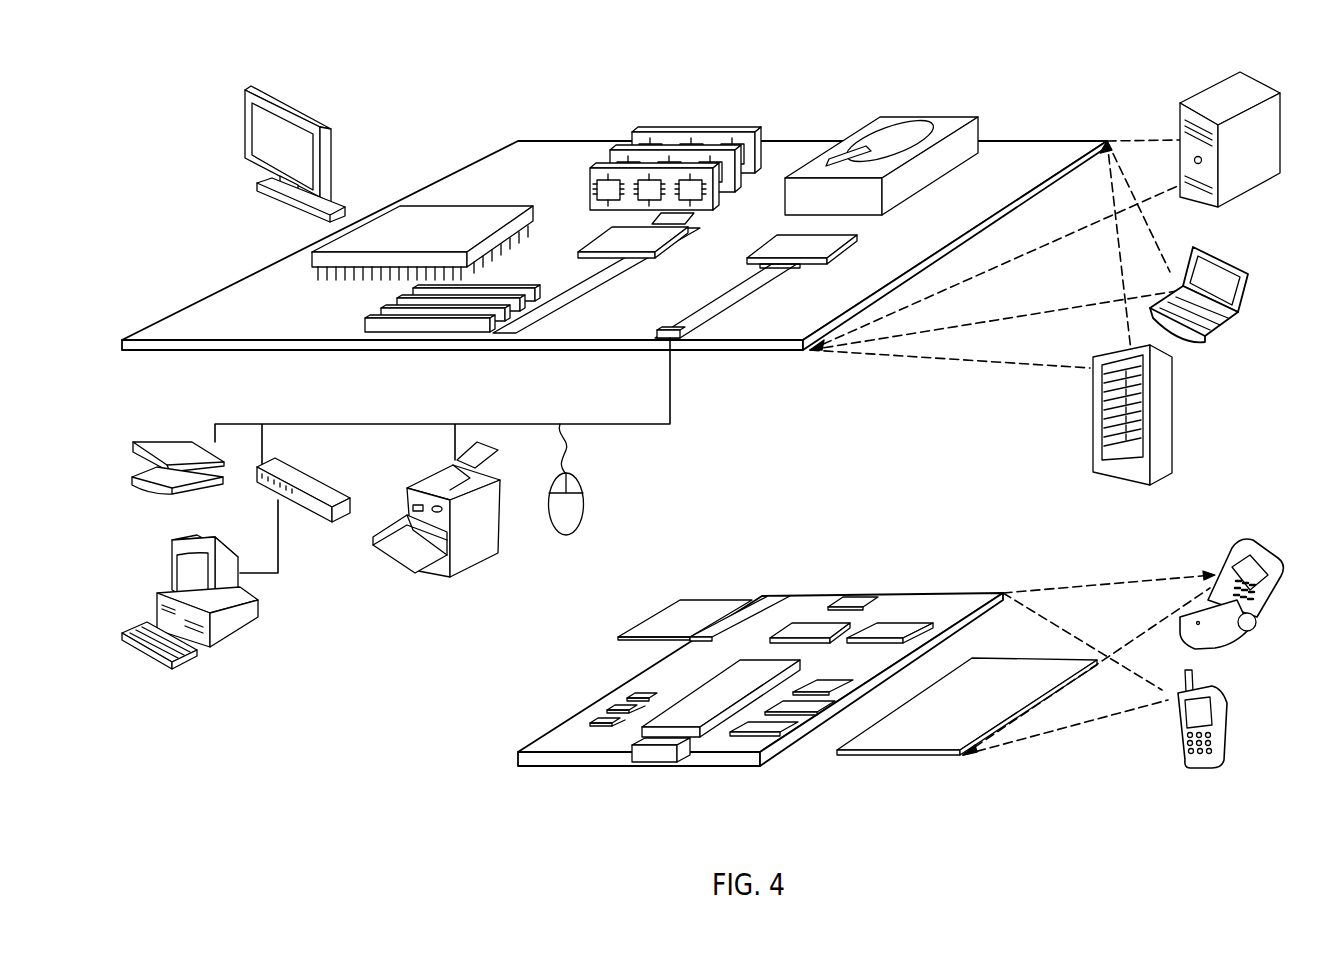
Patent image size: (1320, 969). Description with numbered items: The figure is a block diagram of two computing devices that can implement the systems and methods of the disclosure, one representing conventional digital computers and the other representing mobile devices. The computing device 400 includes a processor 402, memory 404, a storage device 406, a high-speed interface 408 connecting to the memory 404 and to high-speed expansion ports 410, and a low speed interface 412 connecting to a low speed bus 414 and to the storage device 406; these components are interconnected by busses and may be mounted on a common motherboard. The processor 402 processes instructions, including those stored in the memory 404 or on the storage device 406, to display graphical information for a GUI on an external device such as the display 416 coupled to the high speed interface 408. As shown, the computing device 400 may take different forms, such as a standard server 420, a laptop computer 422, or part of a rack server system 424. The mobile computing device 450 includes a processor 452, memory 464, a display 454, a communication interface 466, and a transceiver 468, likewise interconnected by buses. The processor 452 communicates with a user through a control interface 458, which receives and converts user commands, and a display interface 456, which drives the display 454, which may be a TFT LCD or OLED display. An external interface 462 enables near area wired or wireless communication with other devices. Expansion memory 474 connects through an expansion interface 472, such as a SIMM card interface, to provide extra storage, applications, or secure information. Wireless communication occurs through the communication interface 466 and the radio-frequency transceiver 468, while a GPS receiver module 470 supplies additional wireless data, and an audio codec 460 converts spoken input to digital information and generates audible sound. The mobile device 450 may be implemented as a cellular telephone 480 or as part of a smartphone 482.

The computing device 400 is at (442, 113).
The processor 402 is at (320, 257).
The memory 404 is at (637, 128).
The storage device 406 is at (881, 118).
The high-speed interface 408 is at (607, 240).
The high-speed expansion ports 410 is at (387, 312).
The low speed interface 412 is at (784, 243).
The low speed bus 414 is at (680, 342).
The display 416 is at (247, 90).
The standard server 420 is at (1180, 124).
The laptop computer 422 is at (1243, 270).
The rack server system 424 is at (1094, 418).
The computing device 450 is at (490, 771).
The processor 452 is at (695, 722).
The display 454 is at (927, 740).
The display interface 456 is at (760, 728).
The control interface 458 is at (793, 705).
The audio codec 460 is at (820, 683).
The external interface 462 is at (657, 755).
The memory 464 is at (610, 714).
The communication interface 466 is at (813, 628).
The transceiver 468 is at (888, 630).
The GPS receiver module 470 is at (862, 602).
The expansion interface 472 is at (734, 608).
The expansion memory 474 is at (667, 608).
The cellular telephone 480 is at (1231, 550).
The smartphone 482 is at (1179, 728).